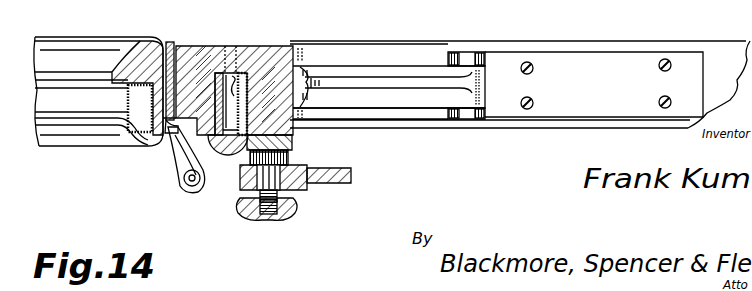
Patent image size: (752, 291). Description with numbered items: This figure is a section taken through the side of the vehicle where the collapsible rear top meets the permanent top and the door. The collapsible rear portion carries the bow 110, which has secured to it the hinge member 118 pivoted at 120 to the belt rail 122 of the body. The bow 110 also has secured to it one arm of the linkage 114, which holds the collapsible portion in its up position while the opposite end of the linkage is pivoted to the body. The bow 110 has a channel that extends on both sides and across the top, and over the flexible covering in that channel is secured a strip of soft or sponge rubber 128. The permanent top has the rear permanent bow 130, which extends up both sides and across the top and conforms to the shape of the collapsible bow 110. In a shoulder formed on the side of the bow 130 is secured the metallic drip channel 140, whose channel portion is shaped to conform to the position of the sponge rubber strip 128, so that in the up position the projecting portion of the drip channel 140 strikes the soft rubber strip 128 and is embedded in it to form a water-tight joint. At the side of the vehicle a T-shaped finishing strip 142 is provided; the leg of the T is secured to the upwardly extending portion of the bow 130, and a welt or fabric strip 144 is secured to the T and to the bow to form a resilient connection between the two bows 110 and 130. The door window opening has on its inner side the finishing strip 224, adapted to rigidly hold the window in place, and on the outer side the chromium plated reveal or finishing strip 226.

The finishing strip 224 is at (82, 42).
The chromium plated reveal or finishing strip 226 is at (96, 147).
The rear permanent bow 130 is at (203, 57).
The metallic drip channel 140 is at (224, 72).
The strip of soft or sponge rubber 128 is at (260, 62).
The bow 110 is at (293, 46).
The hinge member 118 is at (388, 75).
The pivot 120 is at (465, 52).
The belt rail 122 is at (611, 51).
The welt or fabric strip 144 is at (205, 128).
The T-shaped finishing strip 142 is at (228, 148).
The linkage 114 is at (326, 180).